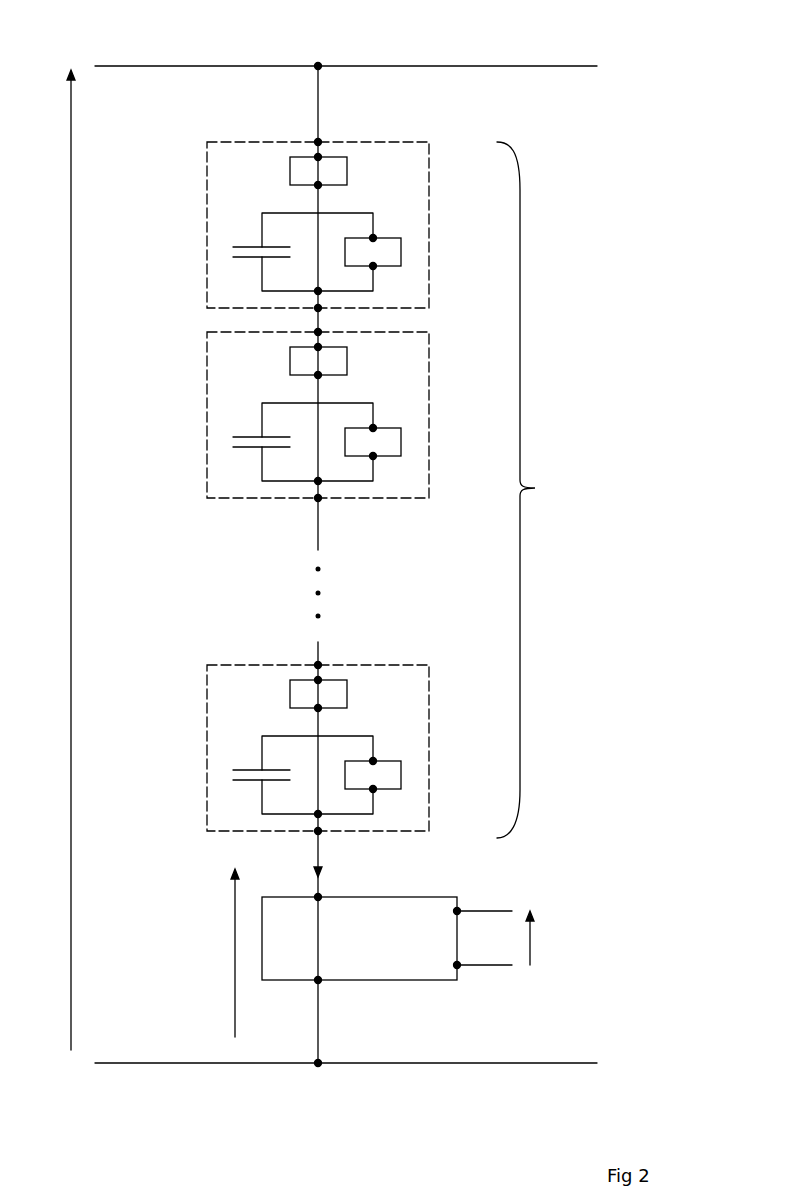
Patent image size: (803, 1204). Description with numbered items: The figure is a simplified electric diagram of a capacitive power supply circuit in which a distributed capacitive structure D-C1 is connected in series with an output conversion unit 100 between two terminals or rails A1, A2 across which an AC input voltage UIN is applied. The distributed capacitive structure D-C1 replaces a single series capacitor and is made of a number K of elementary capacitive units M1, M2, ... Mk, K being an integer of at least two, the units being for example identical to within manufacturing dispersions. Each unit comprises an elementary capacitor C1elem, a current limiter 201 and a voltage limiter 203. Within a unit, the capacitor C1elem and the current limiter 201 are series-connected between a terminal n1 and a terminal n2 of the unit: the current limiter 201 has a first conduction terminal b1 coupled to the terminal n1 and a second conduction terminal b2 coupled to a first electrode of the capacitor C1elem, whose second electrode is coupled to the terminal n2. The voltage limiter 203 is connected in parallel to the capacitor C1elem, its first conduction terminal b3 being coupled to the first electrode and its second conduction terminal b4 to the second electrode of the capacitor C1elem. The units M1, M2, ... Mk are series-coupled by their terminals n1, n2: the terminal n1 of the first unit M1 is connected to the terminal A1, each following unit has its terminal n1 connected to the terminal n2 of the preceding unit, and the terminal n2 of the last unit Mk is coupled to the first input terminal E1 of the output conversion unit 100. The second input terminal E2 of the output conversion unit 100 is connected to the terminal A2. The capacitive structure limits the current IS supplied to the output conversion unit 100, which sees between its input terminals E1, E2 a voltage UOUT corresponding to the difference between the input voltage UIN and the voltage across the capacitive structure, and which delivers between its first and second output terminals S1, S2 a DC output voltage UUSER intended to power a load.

The current limiter 201 is at (347, 172).
The voltage limiter 203 is at (373, 237).
The output conversion unit 100 is at (368, 947).
The terminal n1 is at (320, 140).
The terminal n2 is at (316, 310).
The first conduction terminal b1 is at (316, 157).
The second conduction terminal b2 is at (316, 186).
The first conduction terminal b3 is at (371, 238).
The second conduction terminal b4 is at (375, 268).
The elementary capacitor C1elem is at (250, 246).
The elementary capacitive unit M1 is at (429, 217).
The elementary capacitive unit M2 is at (429, 407).
The elementary capacitive unit Mk is at (429, 740).
The distributed capacitive structure D-C1 is at (542, 490).
The terminal A1 is at (319, 63).
The terminal A2 is at (318, 1066).
The first input terminal E1 is at (316, 897).
The second input terminal E2 is at (318, 982).
The first output terminal S1 is at (460, 909).
The second output terminal S2 is at (459, 967).
The current IS is at (329, 861).
The AC input voltage UIN is at (48, 560).
The voltage UOUT is at (200, 953).
The DC output voltage UUSER is at (566, 938).